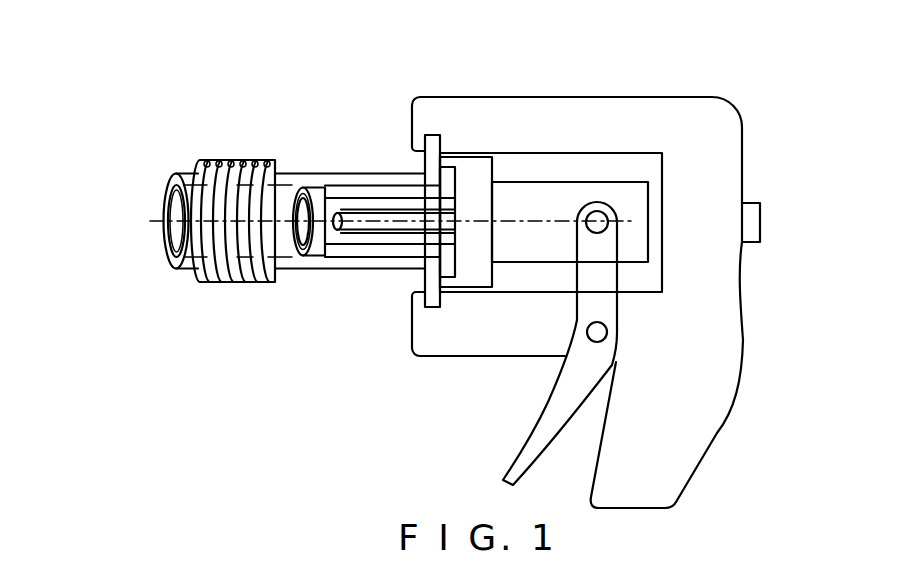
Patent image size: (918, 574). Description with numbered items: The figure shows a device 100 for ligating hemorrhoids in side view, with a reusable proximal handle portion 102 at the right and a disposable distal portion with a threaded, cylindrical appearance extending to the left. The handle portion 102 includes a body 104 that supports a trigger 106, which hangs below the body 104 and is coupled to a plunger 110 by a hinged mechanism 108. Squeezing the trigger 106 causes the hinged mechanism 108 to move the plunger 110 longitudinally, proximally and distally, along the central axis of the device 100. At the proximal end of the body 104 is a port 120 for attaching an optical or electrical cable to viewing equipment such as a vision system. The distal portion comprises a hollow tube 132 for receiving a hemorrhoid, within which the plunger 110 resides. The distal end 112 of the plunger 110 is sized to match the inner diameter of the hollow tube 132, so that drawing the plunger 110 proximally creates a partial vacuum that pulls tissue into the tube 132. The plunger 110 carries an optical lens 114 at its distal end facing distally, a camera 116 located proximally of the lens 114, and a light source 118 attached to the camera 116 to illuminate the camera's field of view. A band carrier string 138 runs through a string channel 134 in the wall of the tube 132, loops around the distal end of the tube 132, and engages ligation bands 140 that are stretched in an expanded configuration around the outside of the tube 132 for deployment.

The device for ligating hemorrhoids 100 is at (138, 112).
The proximal handle portion 102 is at (698, 432).
The body 104 is at (709, 134).
The trigger 106 is at (580, 358).
The hinged mechanism 108 is at (600, 206).
The plunger 110 is at (535, 202).
The distal end of the plunger 112 is at (312, 250).
The optical lens 114 is at (299, 186).
The camera 116 is at (340, 208).
The light source 118 is at (398, 222).
The port 120 is at (760, 224).
The hollow tube 132 is at (172, 238).
The string channel 134 is at (173, 182).
The band carrier string 138 is at (241, 162).
The ligation band 140 is at (219, 162).